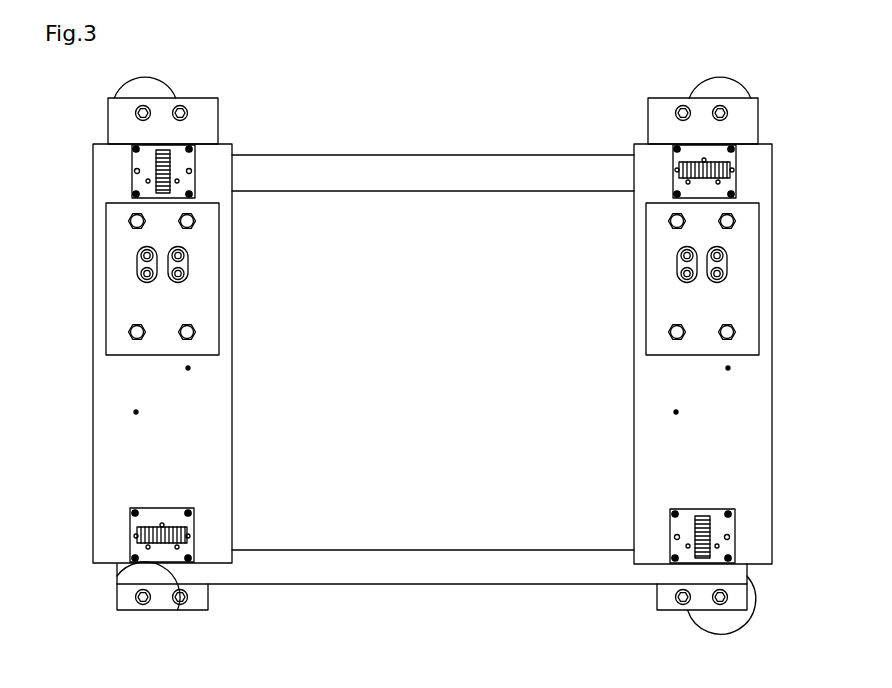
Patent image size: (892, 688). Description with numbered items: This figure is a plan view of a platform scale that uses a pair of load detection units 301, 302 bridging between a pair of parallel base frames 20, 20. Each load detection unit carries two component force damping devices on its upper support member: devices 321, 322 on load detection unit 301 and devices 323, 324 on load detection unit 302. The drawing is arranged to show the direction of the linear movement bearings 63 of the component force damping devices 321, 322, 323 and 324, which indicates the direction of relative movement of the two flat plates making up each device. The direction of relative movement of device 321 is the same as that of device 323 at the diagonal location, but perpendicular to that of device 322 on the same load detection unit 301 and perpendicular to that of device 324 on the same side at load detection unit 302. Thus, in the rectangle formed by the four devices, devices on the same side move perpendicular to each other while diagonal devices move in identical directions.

The base frame 20 is at (375, 154).
The load detection unit 301 is at (772, 442).
The load detection unit 302 is at (92, 472).
The component force damping device 321 is at (735, 545).
The component force damping device 322 is at (735, 163).
The component force damping device 323 is at (130, 163).
The component force damping device 324 is at (130, 528).
The linear movement bearing 63 is at (708, 528).